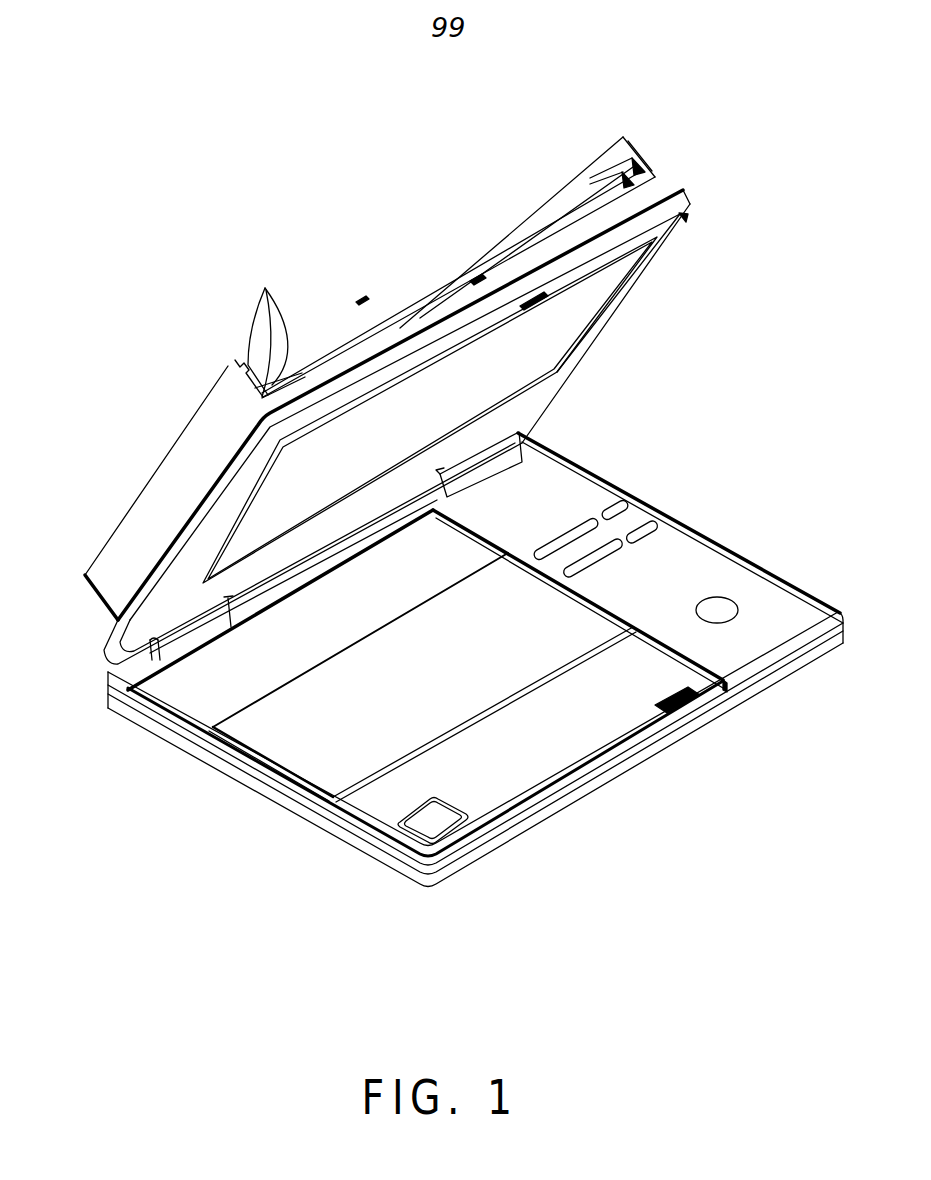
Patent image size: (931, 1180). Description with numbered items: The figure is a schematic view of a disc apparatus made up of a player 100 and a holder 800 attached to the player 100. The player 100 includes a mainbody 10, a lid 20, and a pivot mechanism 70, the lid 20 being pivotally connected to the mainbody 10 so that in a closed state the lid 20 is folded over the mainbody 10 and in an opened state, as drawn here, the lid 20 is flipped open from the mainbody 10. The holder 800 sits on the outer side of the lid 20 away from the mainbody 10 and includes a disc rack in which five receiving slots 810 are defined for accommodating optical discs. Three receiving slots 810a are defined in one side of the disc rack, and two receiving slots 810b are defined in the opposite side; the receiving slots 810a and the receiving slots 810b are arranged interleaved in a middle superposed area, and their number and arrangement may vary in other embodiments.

The mainbody 10 is at (583, 487).
The lid 20 is at (608, 318).
The pivot mechanism 70 is at (510, 453).
The player 100 is at (740, 297).
The holder 800 is at (653, 180).
The receiving slots 810 is at (400, 123).
The receiving slots 810a is at (271, 327).
The receiving slots 810b is at (642, 180).